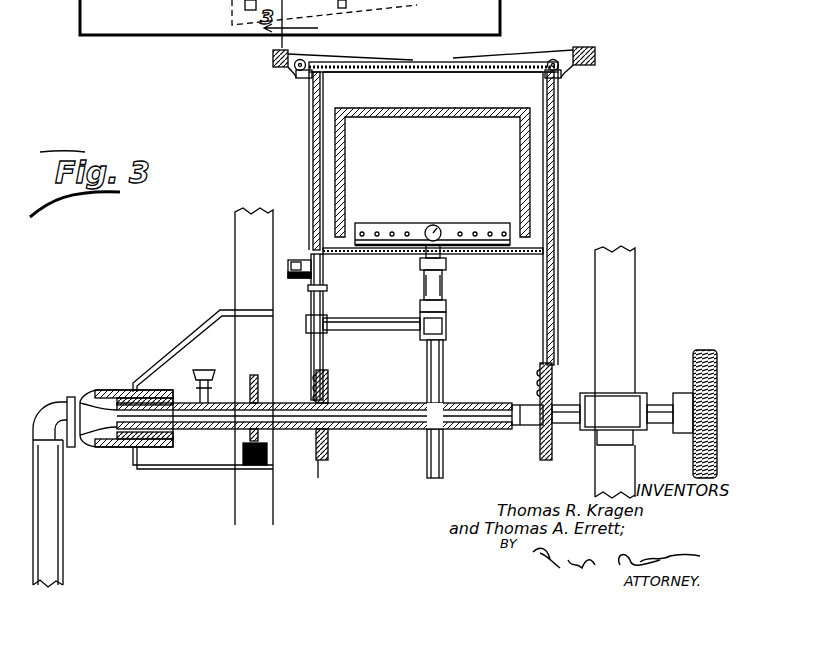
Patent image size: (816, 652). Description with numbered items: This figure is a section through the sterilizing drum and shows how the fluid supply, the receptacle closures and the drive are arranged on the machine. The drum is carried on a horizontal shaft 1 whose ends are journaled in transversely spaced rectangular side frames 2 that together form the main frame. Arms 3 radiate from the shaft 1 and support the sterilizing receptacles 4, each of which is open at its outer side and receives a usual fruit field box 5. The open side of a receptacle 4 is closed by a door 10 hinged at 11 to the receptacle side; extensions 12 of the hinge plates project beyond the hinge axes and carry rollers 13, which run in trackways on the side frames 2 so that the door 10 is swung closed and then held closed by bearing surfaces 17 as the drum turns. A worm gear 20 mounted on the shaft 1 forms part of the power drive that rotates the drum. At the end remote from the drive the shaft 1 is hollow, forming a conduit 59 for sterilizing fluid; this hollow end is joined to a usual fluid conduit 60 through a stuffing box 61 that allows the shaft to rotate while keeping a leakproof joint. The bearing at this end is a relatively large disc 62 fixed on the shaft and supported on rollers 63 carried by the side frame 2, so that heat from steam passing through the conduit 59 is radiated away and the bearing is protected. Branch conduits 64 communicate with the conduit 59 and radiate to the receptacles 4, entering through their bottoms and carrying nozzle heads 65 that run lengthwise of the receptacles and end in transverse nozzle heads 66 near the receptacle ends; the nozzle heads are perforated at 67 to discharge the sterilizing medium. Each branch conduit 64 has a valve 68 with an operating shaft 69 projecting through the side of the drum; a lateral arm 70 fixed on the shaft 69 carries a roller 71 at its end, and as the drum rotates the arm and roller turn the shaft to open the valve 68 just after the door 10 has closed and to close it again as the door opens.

The shaft 1 is at (660, 407).
The side frames 2 is at (435, 366).
The arms 3 is at (325, 362).
The sterilizing receptacles 4 is at (433, 213).
The field box 5 is at (483, 87).
The doors 10 is at (445, 67).
The hinges 11 is at (302, 61).
The hinge plate extensions 12 is at (362, 60).
The rollers 13 is at (270, 55).
The bearing surfaces 17 is at (270, 70).
The worm gear 20 is at (728, 325).
The conduit 59 is at (368, 415).
The fluid conduit 60 is at (65, 520).
The stuffing box 61 is at (125, 392).
The disc 62 is at (256, 375).
The rollers 63 is at (256, 466).
The branch conduits 64 is at (446, 296).
The nozzle heads 65 is at (437, 225).
The transverse nozzle heads 66 is at (480, 225).
The perforations 67 is at (364, 230).
The valves 68 is at (448, 326).
The operating shafts 69 is at (340, 330).
The lateral arms 70 is at (311, 300).
The rollers 71 is at (300, 258).